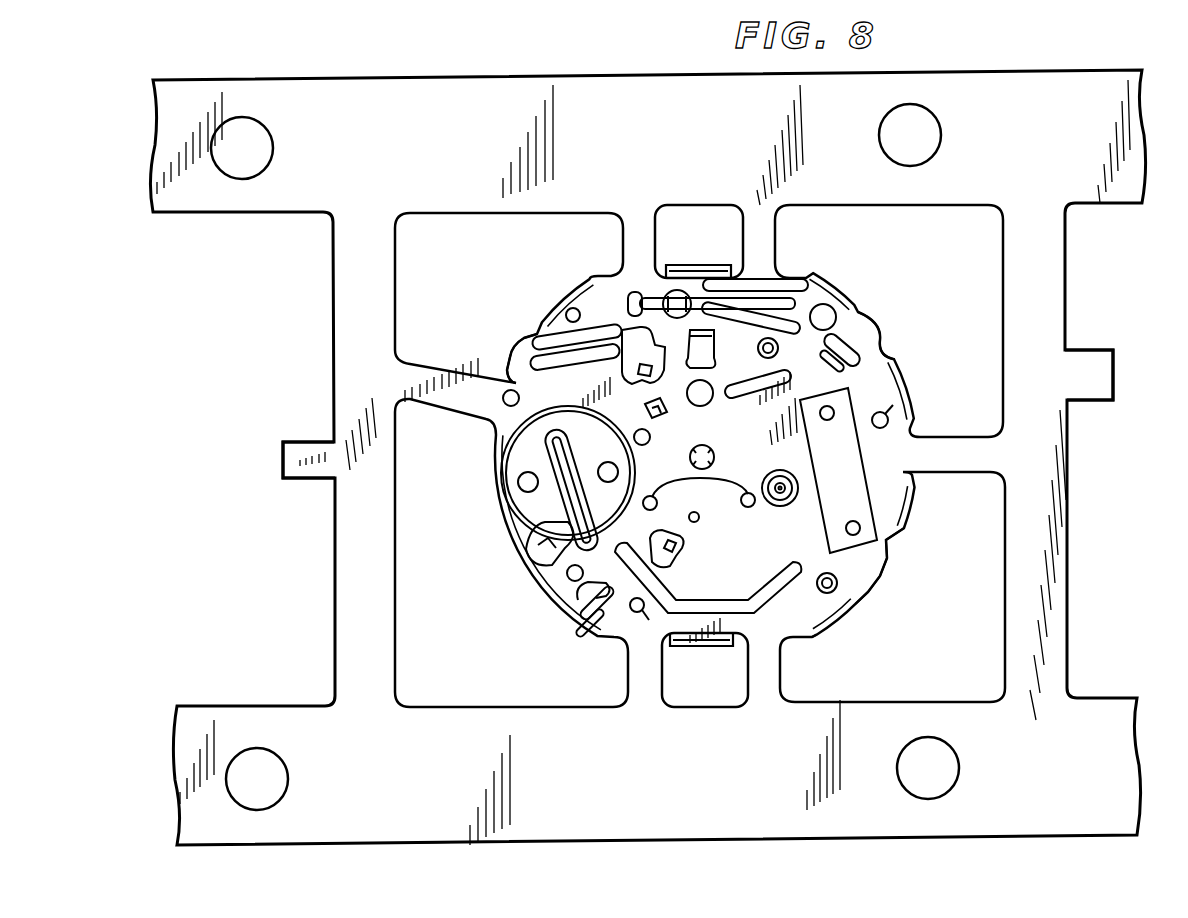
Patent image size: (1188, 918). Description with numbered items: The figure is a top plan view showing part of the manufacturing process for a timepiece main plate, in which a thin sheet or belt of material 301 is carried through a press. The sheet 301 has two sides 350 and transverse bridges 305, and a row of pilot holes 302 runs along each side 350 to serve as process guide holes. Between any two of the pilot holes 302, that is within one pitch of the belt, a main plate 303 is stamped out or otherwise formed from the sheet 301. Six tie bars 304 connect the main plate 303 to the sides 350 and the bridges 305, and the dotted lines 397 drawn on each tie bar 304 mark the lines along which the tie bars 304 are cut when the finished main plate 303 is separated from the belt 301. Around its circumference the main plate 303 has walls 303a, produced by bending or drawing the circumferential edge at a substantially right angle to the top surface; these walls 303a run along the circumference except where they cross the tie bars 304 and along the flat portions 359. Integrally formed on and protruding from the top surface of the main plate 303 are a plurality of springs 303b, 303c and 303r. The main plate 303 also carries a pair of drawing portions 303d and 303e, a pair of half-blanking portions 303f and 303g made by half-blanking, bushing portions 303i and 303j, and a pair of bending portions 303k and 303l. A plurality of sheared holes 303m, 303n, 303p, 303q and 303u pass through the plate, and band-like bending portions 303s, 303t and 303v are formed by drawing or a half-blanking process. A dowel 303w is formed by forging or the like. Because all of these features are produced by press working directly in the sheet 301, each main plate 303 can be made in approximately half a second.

The thin sheet of material 301 is at (862, 86).
The pilot holes 302 is at (930, 122).
The main plate 303 is at (793, 642).
The walls 303a is at (562, 300).
The spring 303b is at (778, 310).
The spring 303c is at (538, 535).
The drawing portion 303d is at (522, 508).
The drawing portion 303e is at (766, 472).
The half-blanking portion 303f is at (812, 453).
The half-blanking portion 303g is at (668, 298).
The bushing portion 303i is at (834, 624).
The bushing portion 303j is at (822, 350).
The bending portion 303k is at (716, 352).
The bending portion 303l is at (685, 577).
The sheared hole 303m is at (692, 514).
The sheared hole 303n is at (792, 503).
The sheared hole 303p is at (598, 640).
The sheared hole 303q is at (582, 626).
The spring 303r is at (577, 636).
The band-like bending portion 303s is at (776, 590).
The band-like bending portion 303t is at (781, 282).
The sheared hole 303u is at (530, 356).
The band-like bending portion 303v is at (690, 462).
The dowel 303w is at (754, 509).
The tie bars 304 is at (424, 380).
The bridges 305 is at (1055, 294).
The sides 350 is at (610, 86).
The flat portions 359 is at (512, 356).
The dotted lines 397 is at (660, 248).